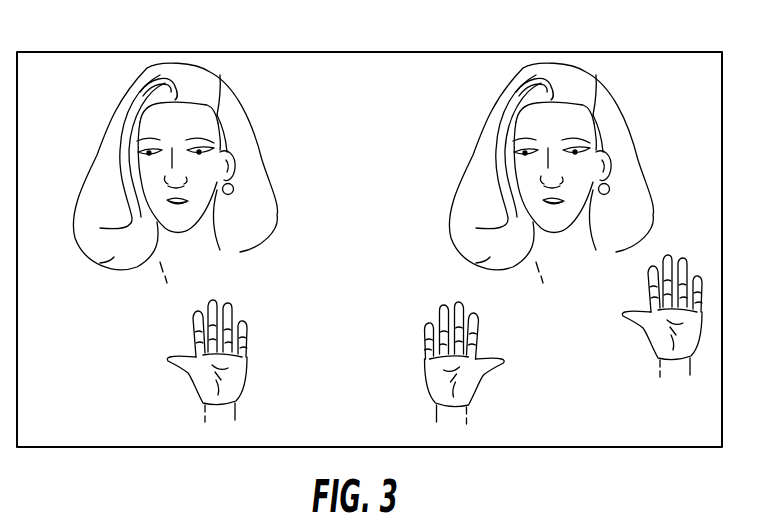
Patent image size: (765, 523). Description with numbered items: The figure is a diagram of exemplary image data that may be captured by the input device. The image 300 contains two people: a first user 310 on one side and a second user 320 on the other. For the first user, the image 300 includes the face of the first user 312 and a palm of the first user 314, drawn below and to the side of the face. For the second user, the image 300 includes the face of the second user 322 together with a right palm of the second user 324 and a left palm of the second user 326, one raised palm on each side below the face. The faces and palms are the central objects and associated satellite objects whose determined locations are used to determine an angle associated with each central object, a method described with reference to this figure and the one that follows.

The image 300 is at (647, 51).
The first user 310 is at (262, 135).
The face of the first user 312 is at (88, 172).
The palm of the first user 314 is at (168, 360).
The second user 320 is at (473, 92).
The face of the second user 322 is at (620, 116).
The right palm of the second user 324 is at (423, 373).
The left palm of the second user 326 is at (622, 316).